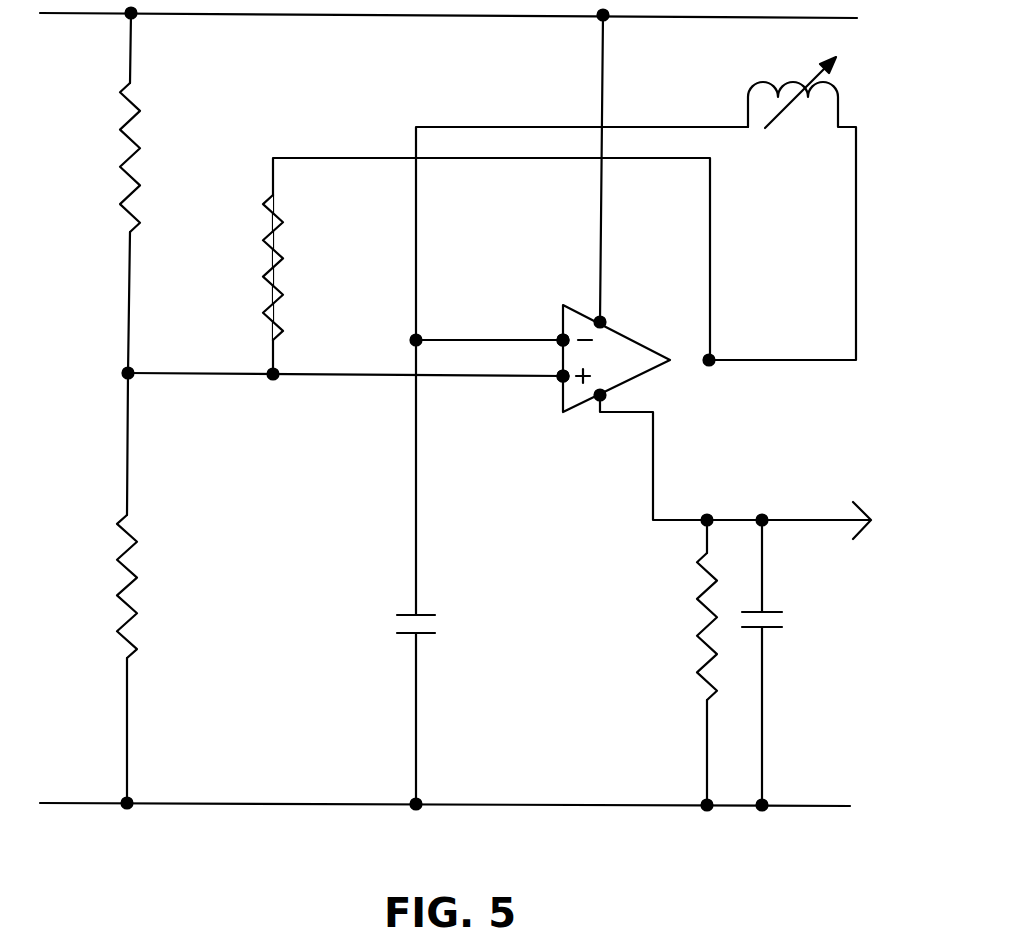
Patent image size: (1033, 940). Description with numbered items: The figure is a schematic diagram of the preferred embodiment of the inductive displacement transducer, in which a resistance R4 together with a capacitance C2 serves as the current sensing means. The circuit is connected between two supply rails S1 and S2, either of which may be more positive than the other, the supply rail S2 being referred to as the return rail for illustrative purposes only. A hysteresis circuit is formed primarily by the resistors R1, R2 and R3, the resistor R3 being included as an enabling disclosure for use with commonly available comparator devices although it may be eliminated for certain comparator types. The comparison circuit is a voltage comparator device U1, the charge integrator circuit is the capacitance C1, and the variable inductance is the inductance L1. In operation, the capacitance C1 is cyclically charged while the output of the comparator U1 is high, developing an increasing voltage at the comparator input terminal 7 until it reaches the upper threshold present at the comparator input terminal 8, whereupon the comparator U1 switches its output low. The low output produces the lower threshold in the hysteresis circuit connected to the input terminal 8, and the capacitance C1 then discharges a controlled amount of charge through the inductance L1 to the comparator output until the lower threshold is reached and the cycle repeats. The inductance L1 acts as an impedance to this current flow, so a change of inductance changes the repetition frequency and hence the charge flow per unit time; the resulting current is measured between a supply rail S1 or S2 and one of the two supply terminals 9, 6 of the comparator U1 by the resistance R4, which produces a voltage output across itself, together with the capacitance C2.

The supply terminal 6 is at (591, 413).
The comparator input terminal 7 is at (545, 323).
The comparator input terminal 8 is at (552, 388).
The supply terminal 9 is at (613, 315).
The resistor R1 is at (152, 193).
The resistor R2 is at (154, 588).
The resistor R3 is at (486, 266).
The resistance R4 is at (675, 660).
The capacitance C1 is at (572, 465).
The capacitance C2 is at (792, 660).
The variable inductance L1 is at (782, 208).
The voltage comparator device U1 is at (715, 277).
The supply rail S1 is at (475, 21).
The supply rail S2 is at (472, 809).